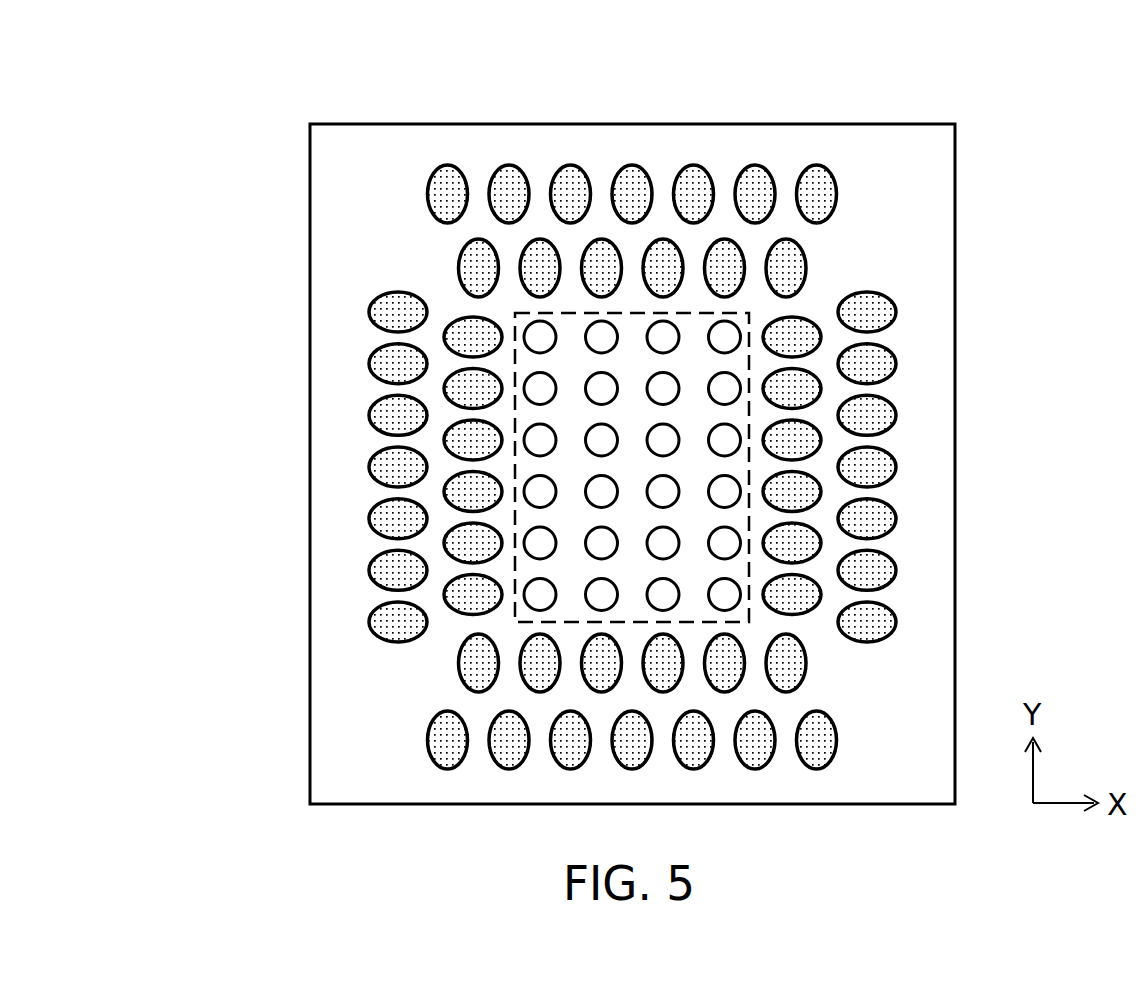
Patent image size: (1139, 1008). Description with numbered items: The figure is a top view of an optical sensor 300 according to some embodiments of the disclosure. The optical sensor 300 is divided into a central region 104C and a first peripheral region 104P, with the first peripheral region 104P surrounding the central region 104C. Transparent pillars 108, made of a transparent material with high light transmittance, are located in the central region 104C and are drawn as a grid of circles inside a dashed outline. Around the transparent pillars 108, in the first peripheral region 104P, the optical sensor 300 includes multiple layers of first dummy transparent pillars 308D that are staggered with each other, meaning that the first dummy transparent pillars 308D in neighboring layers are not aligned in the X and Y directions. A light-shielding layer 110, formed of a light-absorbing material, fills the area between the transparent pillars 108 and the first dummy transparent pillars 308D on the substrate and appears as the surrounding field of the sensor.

The optical sensor 300 is at (263, 106).
The light-shielding layer 110 is at (937, 780).
The first peripheral region 104P is at (352, 172).
The central region 104C is at (727, 466).
The transparent pillars 108 is at (728, 337).
The first dummy transparent pillars 308D is at (787, 270).